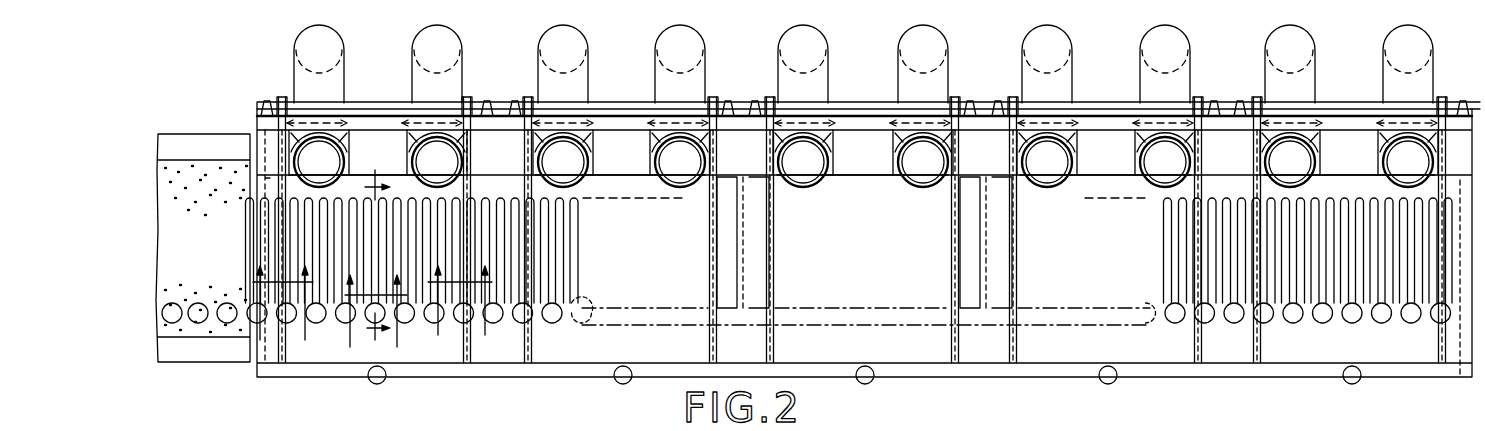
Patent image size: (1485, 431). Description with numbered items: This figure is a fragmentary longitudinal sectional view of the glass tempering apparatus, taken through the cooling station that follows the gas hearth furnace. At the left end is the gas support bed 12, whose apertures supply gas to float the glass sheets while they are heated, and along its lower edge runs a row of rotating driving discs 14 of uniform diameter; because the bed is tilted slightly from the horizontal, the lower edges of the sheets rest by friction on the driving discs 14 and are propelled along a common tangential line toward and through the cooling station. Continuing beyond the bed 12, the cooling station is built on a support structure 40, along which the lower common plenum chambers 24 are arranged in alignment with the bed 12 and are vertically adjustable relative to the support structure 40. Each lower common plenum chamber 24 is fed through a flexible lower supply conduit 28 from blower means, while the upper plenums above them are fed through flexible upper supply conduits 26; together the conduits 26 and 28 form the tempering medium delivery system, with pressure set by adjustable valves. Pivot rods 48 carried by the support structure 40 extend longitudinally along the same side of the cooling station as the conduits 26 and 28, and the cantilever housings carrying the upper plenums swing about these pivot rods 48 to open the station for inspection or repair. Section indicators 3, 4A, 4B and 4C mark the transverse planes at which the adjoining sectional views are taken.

The gas support bed 12 is at (155, 177).
The rotating driving discs 14 is at (197, 323).
The lower common plenum chambers 24 is at (401, 180).
The flexible upper supply conduits 26 is at (462, 155).
The flexible lower supply conduits 28 is at (418, 60).
The support structure 40 is at (344, 385).
The pivot rods 48 is at (618, 103).
The section line 3- 3 is at (369, 255).
The section line 4A- 4A is at (285, 309).
The section line 4B- 4B is at (376, 318).
The section line 4C- 4C is at (464, 305).